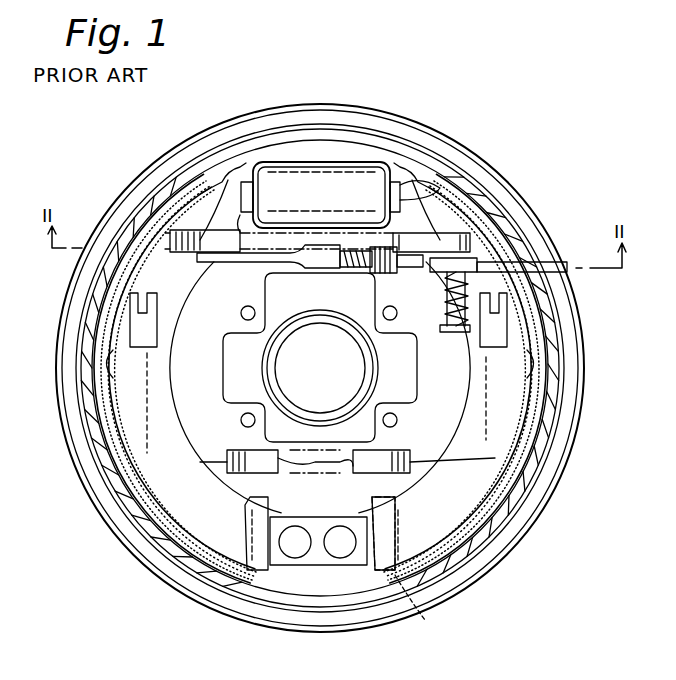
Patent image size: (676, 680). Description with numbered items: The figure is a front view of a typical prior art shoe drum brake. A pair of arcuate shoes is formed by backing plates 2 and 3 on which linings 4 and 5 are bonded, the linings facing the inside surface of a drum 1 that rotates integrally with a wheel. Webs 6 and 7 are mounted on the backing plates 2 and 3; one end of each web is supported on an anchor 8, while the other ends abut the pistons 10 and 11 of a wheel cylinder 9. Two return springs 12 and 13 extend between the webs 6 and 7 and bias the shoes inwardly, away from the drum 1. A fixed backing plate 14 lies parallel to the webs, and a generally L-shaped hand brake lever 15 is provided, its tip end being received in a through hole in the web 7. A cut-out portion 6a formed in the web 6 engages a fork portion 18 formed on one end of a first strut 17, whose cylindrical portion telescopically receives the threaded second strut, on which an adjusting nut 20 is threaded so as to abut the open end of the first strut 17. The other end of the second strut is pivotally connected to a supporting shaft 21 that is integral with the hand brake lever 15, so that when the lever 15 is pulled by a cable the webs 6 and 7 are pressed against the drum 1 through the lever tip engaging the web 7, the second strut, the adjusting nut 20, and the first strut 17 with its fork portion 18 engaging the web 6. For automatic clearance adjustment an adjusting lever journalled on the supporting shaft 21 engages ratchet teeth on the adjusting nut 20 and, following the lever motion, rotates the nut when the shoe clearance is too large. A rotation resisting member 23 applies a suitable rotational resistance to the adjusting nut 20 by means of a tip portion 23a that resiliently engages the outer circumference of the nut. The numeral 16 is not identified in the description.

The drum 1 is at (536, 303).
The backing plate 2 is at (125, 440).
The backing plate 3 is at (510, 457).
The lining 4 is at (142, 497).
The lining 5 is at (513, 482).
The web 6 is at (143, 403).
The cut-out portion 6a is at (213, 261).
The web 7 is at (511, 400).
The anchor 8 is at (320, 555).
The wheel cylinder 9 is at (343, 173).
The piston 10 is at (250, 173).
The piston 11 is at (400, 190).
The return spring 12 is at (469, 224).
The return spring 13 is at (485, 505).
The backing plate 14 is at (390, 578).
The hand brake lever 15 is at (558, 262).
The axle hub flange 16 is at (307, 270).
The first strut 17 is at (270, 257).
The fork portion 18 is at (207, 260).
The adjusting nut 20 is at (393, 234).
The supporting shaft 21 is at (470, 330).
The rotation resisting member 23 is at (347, 272).
The tip portion 23a is at (392, 274).